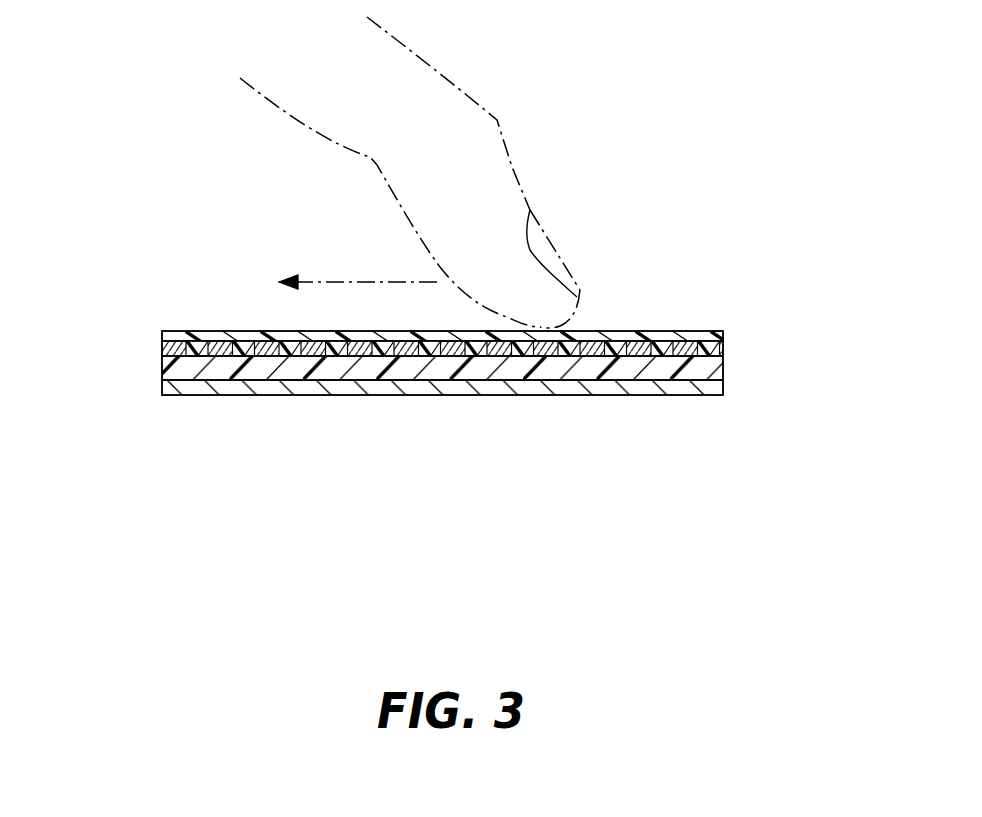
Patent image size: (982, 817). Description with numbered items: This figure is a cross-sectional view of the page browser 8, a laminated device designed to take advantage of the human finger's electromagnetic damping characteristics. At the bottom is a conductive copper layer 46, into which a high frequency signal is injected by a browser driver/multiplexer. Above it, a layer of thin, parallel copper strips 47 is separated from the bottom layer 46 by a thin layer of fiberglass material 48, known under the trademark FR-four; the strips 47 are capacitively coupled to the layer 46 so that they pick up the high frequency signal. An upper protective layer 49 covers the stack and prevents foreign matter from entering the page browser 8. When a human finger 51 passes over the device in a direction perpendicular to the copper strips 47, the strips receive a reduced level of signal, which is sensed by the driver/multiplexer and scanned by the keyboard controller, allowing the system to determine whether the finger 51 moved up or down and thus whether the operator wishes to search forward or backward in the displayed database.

The page browser 8 is at (451, 395).
The bottom conductive layer 46 is at (703, 388).
The copper strips 47 is at (723, 348).
The fiberglass layer 48 is at (172, 368).
The upper protective layer 49 is at (627, 340).
The human finger 51 is at (517, 167).